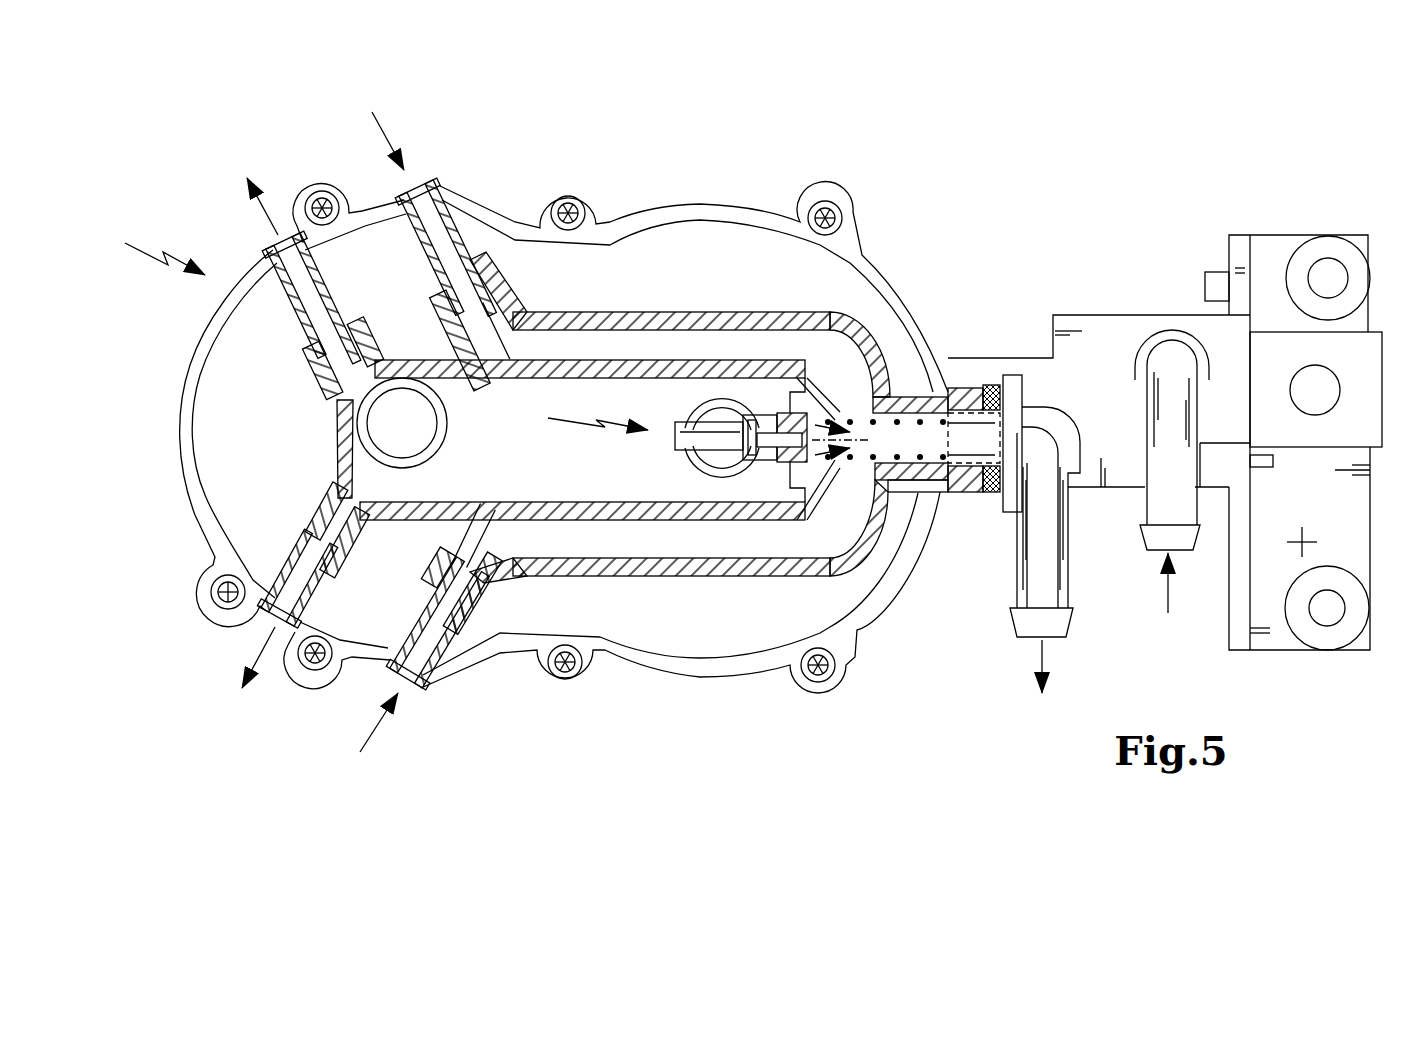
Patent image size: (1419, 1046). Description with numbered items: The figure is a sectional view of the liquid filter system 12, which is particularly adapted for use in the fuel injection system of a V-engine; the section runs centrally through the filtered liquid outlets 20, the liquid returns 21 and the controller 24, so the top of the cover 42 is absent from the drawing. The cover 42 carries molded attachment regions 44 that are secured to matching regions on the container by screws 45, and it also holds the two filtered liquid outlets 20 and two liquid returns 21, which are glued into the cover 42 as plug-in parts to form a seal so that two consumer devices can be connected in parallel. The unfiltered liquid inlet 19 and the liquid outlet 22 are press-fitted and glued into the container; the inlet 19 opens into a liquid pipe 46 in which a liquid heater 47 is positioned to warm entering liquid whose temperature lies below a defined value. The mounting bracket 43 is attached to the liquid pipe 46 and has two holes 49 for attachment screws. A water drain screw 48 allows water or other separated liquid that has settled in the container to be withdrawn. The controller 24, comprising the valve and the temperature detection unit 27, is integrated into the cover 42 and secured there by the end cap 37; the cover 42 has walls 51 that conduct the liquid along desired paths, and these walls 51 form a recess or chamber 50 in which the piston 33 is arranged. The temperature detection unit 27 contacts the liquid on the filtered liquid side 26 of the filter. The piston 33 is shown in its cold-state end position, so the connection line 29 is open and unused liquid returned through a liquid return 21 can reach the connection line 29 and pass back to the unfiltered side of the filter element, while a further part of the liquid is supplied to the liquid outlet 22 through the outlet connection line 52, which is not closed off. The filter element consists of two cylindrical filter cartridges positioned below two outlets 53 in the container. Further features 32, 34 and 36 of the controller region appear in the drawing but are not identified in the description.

The liquid filter system 12 is at (147, 247).
The unfiltered liquid inlet 19 is at (1160, 504).
The filtered liquid outlets 20 is at (314, 310).
The liquid returns 21 is at (436, 246).
The liquid outlet 22 is at (1062, 586).
The controller 24 is at (582, 417).
The filtered liquid side 26 is at (579, 506).
The temperature detection unit 27 is at (678, 449).
The connection line 29 is at (800, 506).
The valve seat 32 is at (782, 405).
The piston 33 is at (826, 405).
The flow opening 34 is at (828, 463).
The connecting piece 36 is at (905, 480).
The end cap 37 is at (1011, 375).
The cover 42 is at (564, 432).
The mounting bracket 43 is at (1355, 555).
The attachment regions 44 is at (308, 192).
The screws 45 is at (326, 190).
The liquid pipe 46 is at (1120, 340).
The liquid heater 47 is at (1372, 352).
The water drain screw 48 is at (211, 591).
The holes 49 is at (1328, 625).
The recess or chamber 50 is at (760, 464).
The walls 51 is at (697, 318).
The outlet connection line 52 is at (897, 410).
The outlets 53 is at (432, 440).